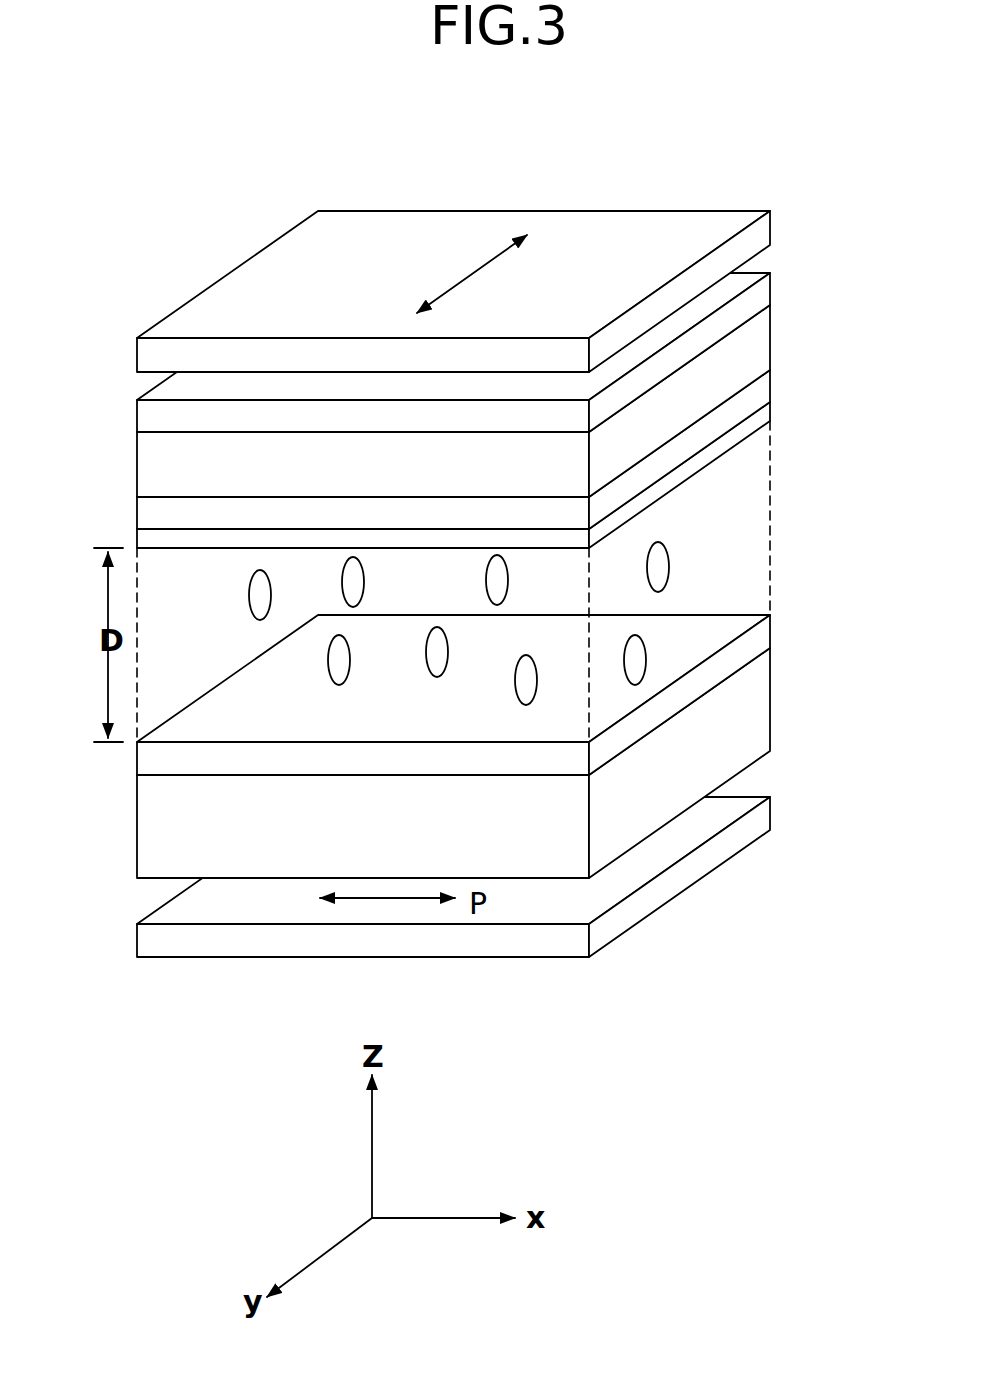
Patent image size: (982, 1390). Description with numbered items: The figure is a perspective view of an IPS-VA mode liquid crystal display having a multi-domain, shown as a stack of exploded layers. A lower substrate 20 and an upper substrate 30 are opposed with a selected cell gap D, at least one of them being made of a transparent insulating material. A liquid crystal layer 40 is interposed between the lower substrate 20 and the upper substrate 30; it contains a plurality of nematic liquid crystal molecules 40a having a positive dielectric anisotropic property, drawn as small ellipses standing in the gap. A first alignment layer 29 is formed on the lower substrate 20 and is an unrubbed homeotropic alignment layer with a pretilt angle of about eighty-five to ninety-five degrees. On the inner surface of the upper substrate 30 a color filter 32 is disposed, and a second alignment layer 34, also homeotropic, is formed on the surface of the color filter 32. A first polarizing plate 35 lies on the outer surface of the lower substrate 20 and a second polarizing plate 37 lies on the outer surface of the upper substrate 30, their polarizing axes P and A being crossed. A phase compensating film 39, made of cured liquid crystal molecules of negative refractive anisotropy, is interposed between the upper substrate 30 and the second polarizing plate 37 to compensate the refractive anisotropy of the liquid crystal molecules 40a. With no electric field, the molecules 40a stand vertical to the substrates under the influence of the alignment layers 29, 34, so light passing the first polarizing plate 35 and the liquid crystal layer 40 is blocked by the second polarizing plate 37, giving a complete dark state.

The second polarizing plate 37 is at (763, 232).
The phase compensating film 39 is at (763, 294).
The upper substrate 30 is at (763, 338).
The color filter 32 is at (763, 378).
The second alignment layer 34 is at (763, 419).
The liquid crystal layer 40 is at (763, 524).
The liquid crystal molecules 40a is at (669, 570).
The first alignment layer 29 is at (765, 637).
The lower substrate 20 is at (765, 713).
The first polarizing plate 35 is at (765, 821).